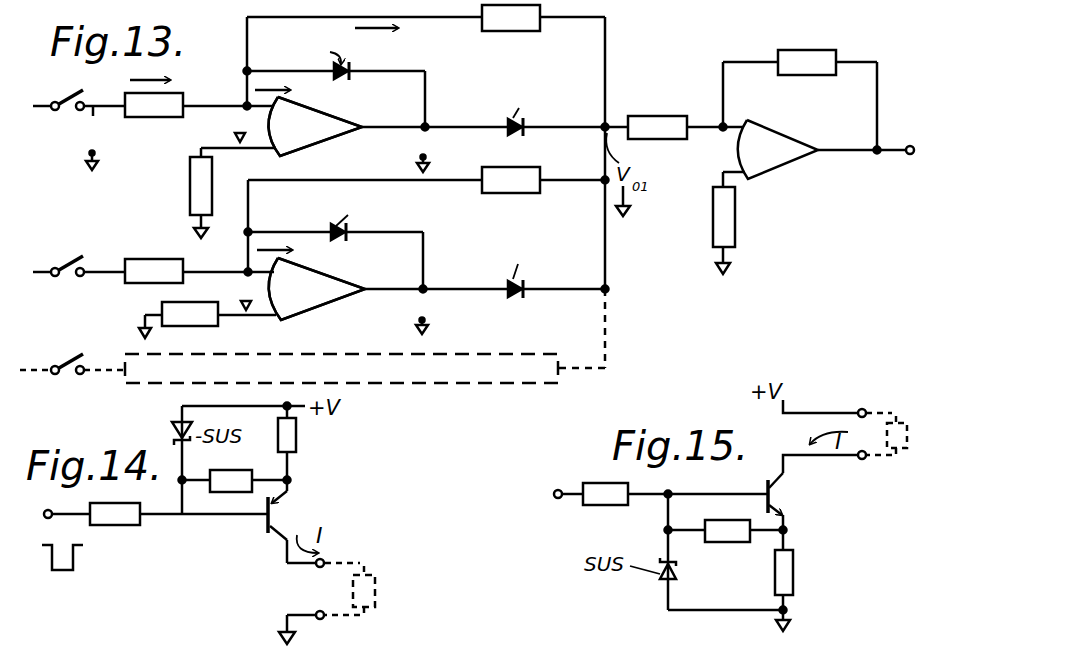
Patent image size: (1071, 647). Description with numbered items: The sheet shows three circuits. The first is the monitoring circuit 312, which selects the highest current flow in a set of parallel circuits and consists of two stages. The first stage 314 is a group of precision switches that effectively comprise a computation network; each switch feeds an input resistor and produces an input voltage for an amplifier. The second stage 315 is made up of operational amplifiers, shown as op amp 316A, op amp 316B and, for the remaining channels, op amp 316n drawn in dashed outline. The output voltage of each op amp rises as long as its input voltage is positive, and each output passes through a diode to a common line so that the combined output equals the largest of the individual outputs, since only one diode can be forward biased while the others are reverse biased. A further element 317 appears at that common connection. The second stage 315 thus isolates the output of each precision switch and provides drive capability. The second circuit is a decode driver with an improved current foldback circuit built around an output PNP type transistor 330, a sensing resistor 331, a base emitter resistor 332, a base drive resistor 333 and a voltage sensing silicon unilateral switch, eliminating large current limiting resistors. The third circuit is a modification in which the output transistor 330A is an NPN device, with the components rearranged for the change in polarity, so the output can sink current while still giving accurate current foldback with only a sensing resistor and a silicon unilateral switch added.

In FIG. 13, the monitoring circuit 312 is at (365, 197).
In FIG. 13, the first stage 314 is at (134, 227).
In FIG. 13, the second stage 315 is at (384, 169).
In FIG. 13, the op amp 316A is at (330, 123).
In FIG. 13, the op amp 316B is at (336, 289).
In FIG. 13, the op amp 316n is at (341, 371).
In FIG. 13, the common output bus 317 is at (607, 101).
In FIG. 14, the output PNP type transistor 330 is at (300, 514).
In FIG. 15, the output transistor 330A is at (787, 491).
In FIG. 14, the sensing resistor 331 is at (298, 438).
In FIG. 15, the sensing resistor 331 is at (797, 572).
In FIG. 14, the base emitter resistor 332 is at (226, 484).
In FIG. 15, the base emitter resistor 332 is at (722, 546).
In FIG. 14, the base drive resistor 333 is at (119, 526).